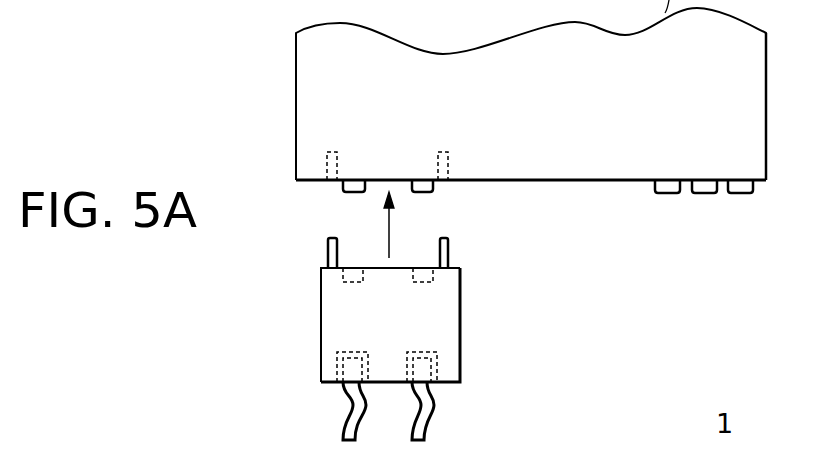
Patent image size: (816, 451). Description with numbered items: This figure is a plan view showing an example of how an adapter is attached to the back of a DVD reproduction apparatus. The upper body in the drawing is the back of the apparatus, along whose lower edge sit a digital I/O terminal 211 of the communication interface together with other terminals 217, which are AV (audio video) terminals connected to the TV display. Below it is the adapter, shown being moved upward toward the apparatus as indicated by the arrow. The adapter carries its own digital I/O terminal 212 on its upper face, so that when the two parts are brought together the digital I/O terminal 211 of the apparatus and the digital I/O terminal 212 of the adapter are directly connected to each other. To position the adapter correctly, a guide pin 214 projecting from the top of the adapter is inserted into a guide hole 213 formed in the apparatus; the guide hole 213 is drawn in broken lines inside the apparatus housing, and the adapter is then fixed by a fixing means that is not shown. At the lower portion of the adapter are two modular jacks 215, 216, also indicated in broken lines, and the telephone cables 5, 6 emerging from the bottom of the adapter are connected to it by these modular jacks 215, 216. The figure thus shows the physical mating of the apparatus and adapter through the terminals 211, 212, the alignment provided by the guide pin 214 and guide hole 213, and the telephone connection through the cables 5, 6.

The digital I/O terminal 211 is at (344, 191).
The digital I/O terminal 212 is at (362, 277).
The guide hole 213 is at (449, 157).
The guide pin 214 is at (449, 246).
The modular jack 215 is at (437, 367).
The modular jack 216 is at (337, 366).
The other terminals 217 is at (770, 207).
The telephone cable 5 is at (432, 405).
The telephone cable 6 is at (341, 412).